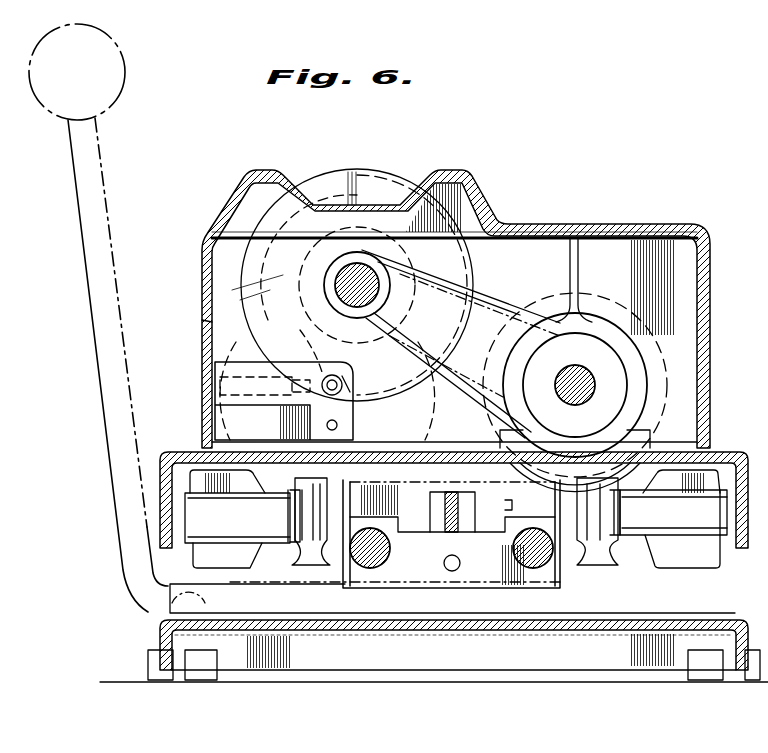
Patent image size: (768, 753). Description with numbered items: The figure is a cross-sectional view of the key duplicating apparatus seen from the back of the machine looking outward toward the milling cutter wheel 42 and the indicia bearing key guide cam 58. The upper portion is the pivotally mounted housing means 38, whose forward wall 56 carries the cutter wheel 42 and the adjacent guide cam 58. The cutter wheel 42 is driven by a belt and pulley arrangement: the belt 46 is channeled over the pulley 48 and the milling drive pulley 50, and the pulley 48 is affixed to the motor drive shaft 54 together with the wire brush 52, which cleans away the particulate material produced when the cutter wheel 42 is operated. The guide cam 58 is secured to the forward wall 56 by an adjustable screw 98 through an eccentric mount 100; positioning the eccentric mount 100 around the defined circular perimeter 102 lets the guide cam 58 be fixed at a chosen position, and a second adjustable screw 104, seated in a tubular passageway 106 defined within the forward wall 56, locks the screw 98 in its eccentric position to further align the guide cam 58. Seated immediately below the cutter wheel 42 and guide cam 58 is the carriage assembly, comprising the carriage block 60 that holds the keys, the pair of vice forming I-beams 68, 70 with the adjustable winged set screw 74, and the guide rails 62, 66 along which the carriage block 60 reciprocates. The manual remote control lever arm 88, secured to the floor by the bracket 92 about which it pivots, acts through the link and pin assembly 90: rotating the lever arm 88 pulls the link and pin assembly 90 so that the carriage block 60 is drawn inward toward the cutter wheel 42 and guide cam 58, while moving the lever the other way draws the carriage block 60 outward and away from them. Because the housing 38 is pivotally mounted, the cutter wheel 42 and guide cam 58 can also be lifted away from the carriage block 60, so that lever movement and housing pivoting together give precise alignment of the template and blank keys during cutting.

The pivotally mounted housing means 38 is at (745, 450).
The milling cutter wheel 42 is at (712, 308).
The belt 46 is at (500, 292).
The pulley 48 is at (330, 259).
The milling drive pulley 50 is at (620, 302).
The wire brush 52 is at (298, 182).
The motor drive shaft 54 is at (360, 282).
The forward wall 56 is at (565, 240).
The indicia bearing key guide cam 58 is at (205, 320).
The carriage block 60 is at (572, 574).
The guide rail 62 is at (533, 560).
The guide rail 66 is at (366, 556).
The vice forming I-beam 68 is at (305, 566).
The vice forming I-beam 70 is at (606, 566).
The adjustable winged set screw 74 is at (205, 562).
The manual remote control lever arm 88 is at (100, 289).
The link and pin assembly 90 is at (447, 536).
The bracket 92 is at (150, 618).
The adjustable screw 98 is at (355, 400).
The eccentric mount 100 is at (333, 374).
The defined circular perimeter 102 is at (352, 380).
The adjustable screw 104 is at (300, 332).
The tubular passageway 106 is at (214, 382).